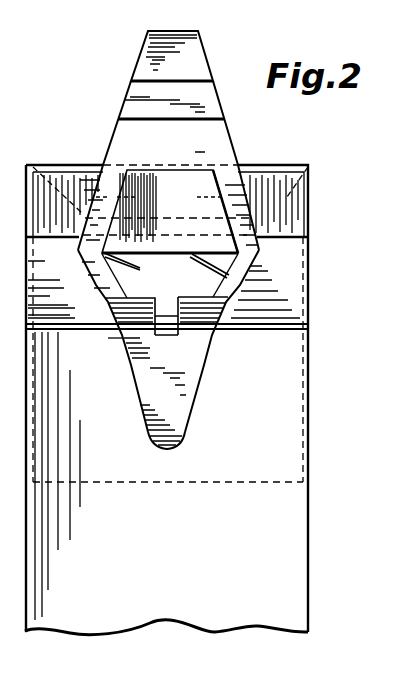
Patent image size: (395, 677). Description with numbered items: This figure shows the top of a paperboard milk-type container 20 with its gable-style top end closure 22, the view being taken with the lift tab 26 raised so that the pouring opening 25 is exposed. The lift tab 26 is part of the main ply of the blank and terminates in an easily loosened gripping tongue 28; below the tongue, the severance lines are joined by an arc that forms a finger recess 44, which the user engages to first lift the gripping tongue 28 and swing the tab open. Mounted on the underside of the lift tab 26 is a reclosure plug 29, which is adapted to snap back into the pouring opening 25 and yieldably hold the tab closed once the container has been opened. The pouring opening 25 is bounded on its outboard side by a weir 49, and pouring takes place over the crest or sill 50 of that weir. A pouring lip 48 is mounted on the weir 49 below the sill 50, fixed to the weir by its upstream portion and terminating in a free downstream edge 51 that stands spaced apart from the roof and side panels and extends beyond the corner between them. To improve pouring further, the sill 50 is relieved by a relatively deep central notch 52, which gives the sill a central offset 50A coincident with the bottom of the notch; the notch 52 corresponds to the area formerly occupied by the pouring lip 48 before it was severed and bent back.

The container 20 is at (258, 632).
The top end closure 22 is at (313, 283).
The pouring opening 25 is at (104, 293).
The lift tab 26 is at (222, 148).
The gripping tongue 28 is at (197, 60).
The reclosure plug 29 is at (232, 212).
The finger recess 44 is at (177, 436).
The pouring lip 48 is at (177, 320).
The weir 49 is at (128, 338).
The crest or sill 50 is at (143, 290).
The central offset 50A is at (158, 297).
The free downstream edge 51 is at (160, 337).
The central notch 52 is at (172, 300).